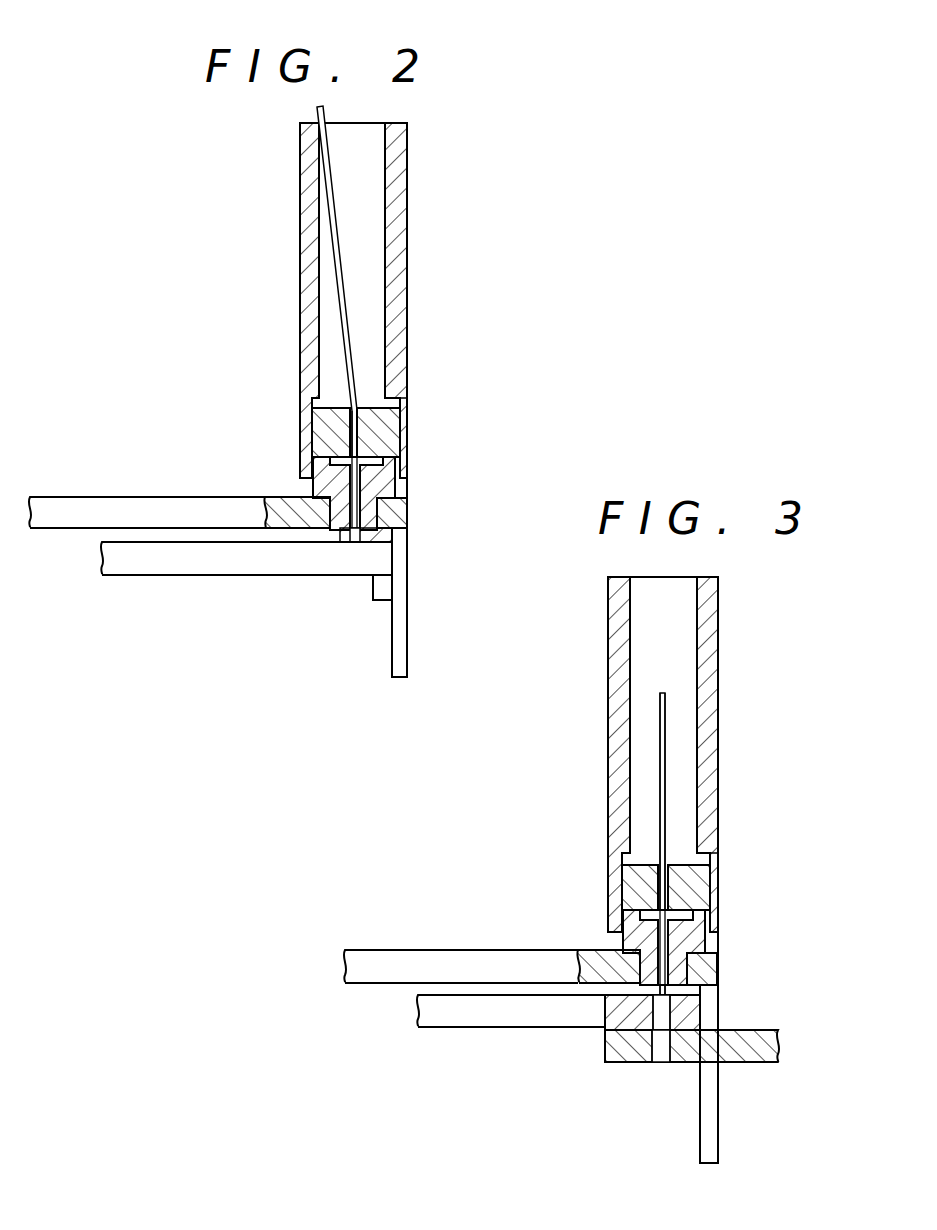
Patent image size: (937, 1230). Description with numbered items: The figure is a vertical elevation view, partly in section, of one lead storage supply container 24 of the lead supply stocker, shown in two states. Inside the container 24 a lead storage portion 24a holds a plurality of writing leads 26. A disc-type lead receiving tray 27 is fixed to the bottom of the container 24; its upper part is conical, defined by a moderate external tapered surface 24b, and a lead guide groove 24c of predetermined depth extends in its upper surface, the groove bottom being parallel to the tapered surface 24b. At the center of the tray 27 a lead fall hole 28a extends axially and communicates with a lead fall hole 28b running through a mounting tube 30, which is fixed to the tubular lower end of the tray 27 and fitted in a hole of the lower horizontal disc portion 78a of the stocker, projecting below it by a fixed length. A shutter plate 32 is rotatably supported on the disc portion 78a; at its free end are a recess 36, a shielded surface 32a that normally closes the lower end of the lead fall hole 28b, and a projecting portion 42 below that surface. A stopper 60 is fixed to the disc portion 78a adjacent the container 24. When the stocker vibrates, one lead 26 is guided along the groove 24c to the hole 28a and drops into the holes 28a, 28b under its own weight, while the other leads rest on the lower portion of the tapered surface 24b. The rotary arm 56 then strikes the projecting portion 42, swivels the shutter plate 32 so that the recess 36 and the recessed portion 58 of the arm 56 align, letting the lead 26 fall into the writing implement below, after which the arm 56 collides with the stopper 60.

In FIG. 2, the lead storage container 24 is at (396, 203).
In FIG. 3, the lead storage container 24 is at (713, 665).
In FIG. 2, the lead storage portion 24a is at (382, 173).
In FIG. 3, the lead storage portion 24a is at (699, 615).
In FIG. 2, the external tapered surface 24b is at (383, 400).
In FIG. 3, the external tapered surface 24b is at (700, 845).
In FIG. 2, the lead guide groove 24c is at (320, 398).
In FIG. 3, the lead guide groove 24c is at (628, 860).
In FIG. 2, the writing lead 26 is at (347, 250).
In FIG. 3, the writing lead 26 is at (666, 720).
In FIG. 2, the lead receiving tray 27 is at (401, 440).
In FIG. 3, the lead receiving tray 27 is at (711, 900).
In FIG. 2, the lead fall hole 28a is at (403, 418).
In FIG. 3, the lead fall hole 28a is at (708, 880).
In FIG. 2, the lead fall hole 28b is at (359, 485).
In FIG. 3, the lead fall hole 28b is at (705, 947).
In FIG. 2, the mounting tube 30 is at (316, 490).
In FIG. 3, the mounting tube 30 is at (627, 938).
In FIG. 2, the shutter plate 32 is at (170, 568).
In FIG. 3, the shutter plate 32 is at (433, 1025).
In FIG. 2, the shielded surface 32a is at (356, 540).
In FIG. 3, the shielded surface 32a is at (712, 1001).
In FIG. 3, the recess 36 is at (667, 1014).
In FIG. 2, the projecting portion 42 is at (373, 588).
In FIG. 3, the rotary arm 56 is at (605, 1045).
In FIG. 3, the recessed portion 58 is at (658, 1063).
In FIG. 2, the stopper 60 is at (400, 595).
In FIG. 3, the stopper 60 is at (712, 1117).
In FIG. 2, the lower horizontal disc portion 78a is at (94, 503).
In FIG. 3, the lower horizontal disc portion 78a is at (400, 965).